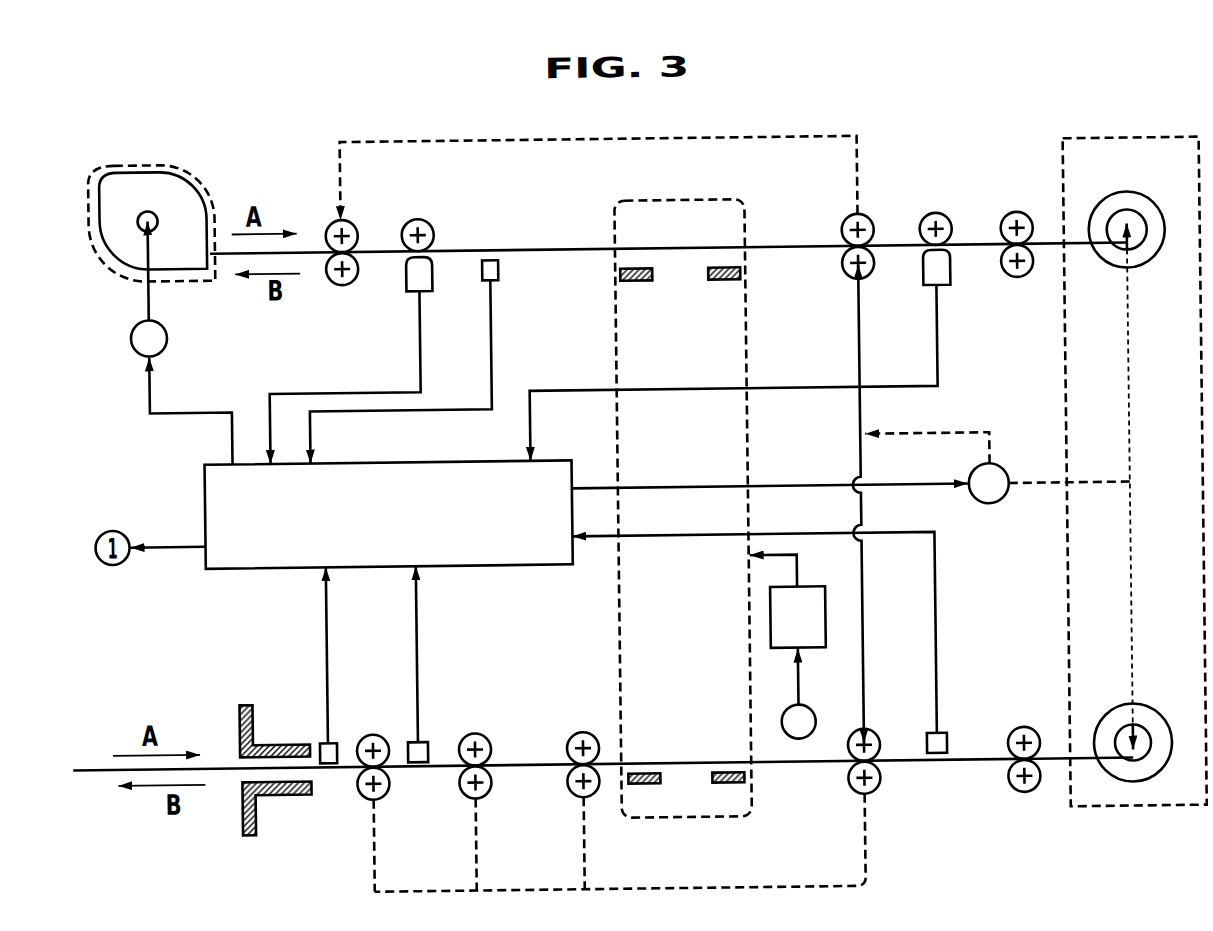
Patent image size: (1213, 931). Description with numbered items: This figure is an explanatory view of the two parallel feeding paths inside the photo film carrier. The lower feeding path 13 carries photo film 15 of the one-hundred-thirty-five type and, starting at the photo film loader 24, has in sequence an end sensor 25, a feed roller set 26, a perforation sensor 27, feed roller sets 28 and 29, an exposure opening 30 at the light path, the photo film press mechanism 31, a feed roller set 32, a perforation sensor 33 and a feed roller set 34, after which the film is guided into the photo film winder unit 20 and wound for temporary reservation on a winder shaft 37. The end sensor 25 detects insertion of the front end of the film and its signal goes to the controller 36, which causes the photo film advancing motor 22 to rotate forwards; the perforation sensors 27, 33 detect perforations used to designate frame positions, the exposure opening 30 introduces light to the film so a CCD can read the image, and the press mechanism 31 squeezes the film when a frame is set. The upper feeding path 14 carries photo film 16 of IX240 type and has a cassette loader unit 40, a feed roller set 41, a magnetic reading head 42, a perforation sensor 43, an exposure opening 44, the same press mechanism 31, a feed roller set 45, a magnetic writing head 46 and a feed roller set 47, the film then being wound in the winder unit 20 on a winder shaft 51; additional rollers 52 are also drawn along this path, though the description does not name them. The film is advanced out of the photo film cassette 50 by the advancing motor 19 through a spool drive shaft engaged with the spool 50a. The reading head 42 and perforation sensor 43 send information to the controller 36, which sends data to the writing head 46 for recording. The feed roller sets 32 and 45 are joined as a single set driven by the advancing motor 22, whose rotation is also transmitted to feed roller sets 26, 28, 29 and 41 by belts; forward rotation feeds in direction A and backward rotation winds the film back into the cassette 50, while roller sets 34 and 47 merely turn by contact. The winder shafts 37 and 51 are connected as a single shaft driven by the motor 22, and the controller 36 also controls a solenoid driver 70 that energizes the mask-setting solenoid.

The feeding path 13 is at (288, 678).
The feeding path 14 is at (301, 203).
The photo film 15 is at (224, 773).
The photo film 16 is at (321, 252).
The advancing motor 19 is at (133, 334).
The photo film winder unit 20 is at (1134, 814).
The photo film advancing motor 22 is at (989, 509).
The photo film loader 24 is at (237, 751).
The end sensor 25 is at (333, 738).
The feed roller set 26 is at (353, 804).
The perforation sensor 27 is at (425, 738).
The feed roller set 28 is at (461, 798).
The feed roller set 29 is at (563, 800).
The exposure opening 30 is at (714, 782).
The photo film press mechanism 31 is at (748, 436).
The feed roller set 32 is at (853, 797).
The perforation sensor 33 is at (947, 737).
The feed roller set 34 is at (1009, 798).
The controller 36 is at (205, 496).
The winder shaft 37 is at (1145, 734).
The cassette loader unit 40 is at (188, 277).
The feed roller set 41 is at (359, 220).
The magnetic reading head 42 is at (405, 276).
The perforation sensor 43 is at (503, 266).
The exposure opening 44 is at (711, 270).
The feed roller set 45 is at (851, 223).
The magnetic writing head 46 is at (955, 270).
The feed roller set 47 is at (1021, 213).
The photo film cassette 50 is at (93, 229).
The spool 50a is at (151, 206).
The winder shaft 51 is at (1146, 254).
The encoder roller 52 is at (427, 218).
The solenoid driver 70 is at (780, 635).